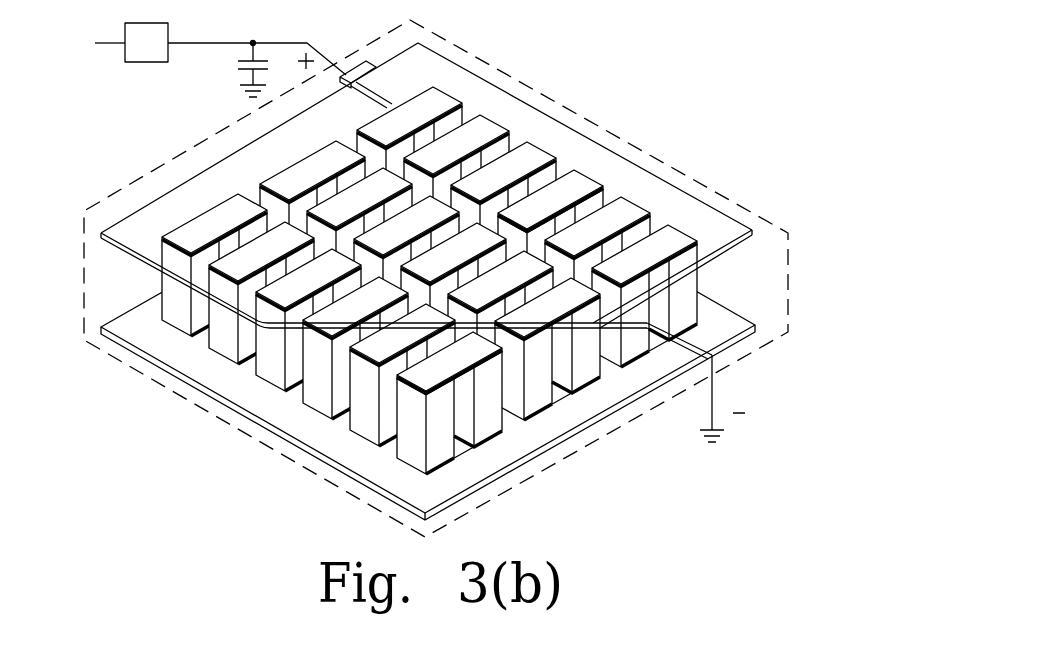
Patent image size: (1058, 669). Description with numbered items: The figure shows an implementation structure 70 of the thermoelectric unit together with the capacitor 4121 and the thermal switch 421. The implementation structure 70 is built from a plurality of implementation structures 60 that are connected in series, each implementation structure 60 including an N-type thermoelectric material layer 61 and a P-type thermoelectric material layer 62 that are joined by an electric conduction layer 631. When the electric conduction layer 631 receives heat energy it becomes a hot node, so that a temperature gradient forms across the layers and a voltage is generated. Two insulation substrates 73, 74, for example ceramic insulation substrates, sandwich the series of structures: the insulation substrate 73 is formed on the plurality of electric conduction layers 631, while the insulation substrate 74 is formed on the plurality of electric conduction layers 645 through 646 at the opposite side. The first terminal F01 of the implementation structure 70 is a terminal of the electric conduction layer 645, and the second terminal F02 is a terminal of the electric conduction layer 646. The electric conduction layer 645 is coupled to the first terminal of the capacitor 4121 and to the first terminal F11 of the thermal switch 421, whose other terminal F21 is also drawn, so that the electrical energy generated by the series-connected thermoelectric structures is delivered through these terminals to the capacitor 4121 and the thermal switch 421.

The implementation structure of the thermoelectric unit 60 is at (472, 307).
The N-type thermoelectric material layer 61 is at (633, 333).
The P-type thermoelectric material layer 62 is at (682, 285).
The electric conduction layer 631 is at (562, 208).
The electric conduction layer 645 is at (370, 61).
The electric conduction layer 646 is at (707, 335).
The implementation structure of the thermoelectric unit 70 is at (552, 100).
The insulation substrate 73 is at (620, 150).
The insulation substrate 74 is at (233, 404).
The thermal switch 421 is at (155, 62).
The capacitor 4121 is at (240, 68).
The input signal F21 is at (100, 24).
The first terminal of the thermal switch F11 is at (210, 24).
The first terminal of the implementation structure F01 is at (306, 45).
The second terminal of the implementation structure F02 is at (736, 398).